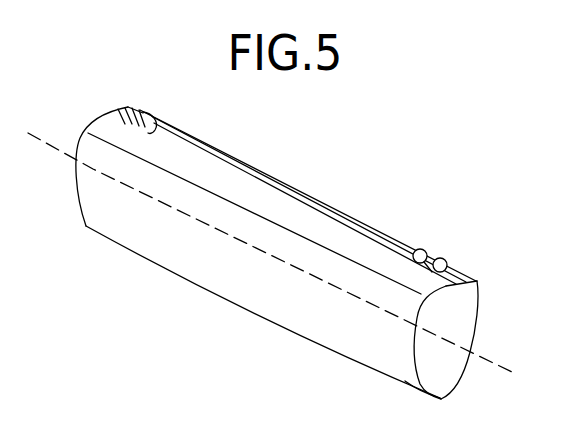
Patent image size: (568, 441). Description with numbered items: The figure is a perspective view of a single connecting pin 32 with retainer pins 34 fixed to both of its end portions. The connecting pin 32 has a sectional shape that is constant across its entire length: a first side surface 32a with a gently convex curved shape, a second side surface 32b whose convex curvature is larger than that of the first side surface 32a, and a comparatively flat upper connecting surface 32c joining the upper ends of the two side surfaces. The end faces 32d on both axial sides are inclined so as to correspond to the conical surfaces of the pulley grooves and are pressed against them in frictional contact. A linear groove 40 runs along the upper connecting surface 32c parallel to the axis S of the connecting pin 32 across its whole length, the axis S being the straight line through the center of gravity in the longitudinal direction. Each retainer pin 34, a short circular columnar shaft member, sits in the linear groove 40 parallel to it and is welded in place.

The connecting pin 32 is at (318, 152).
The first side surface 32a is at (471, 349).
The second side surface 32b is at (172, 247).
The upper connecting surface 32c is at (320, 223).
The end face 32d is at (442, 372).
The retainer pin 34 is at (130, 106).
The linear groove 40 is at (223, 158).
The axis S is at (280, 260).